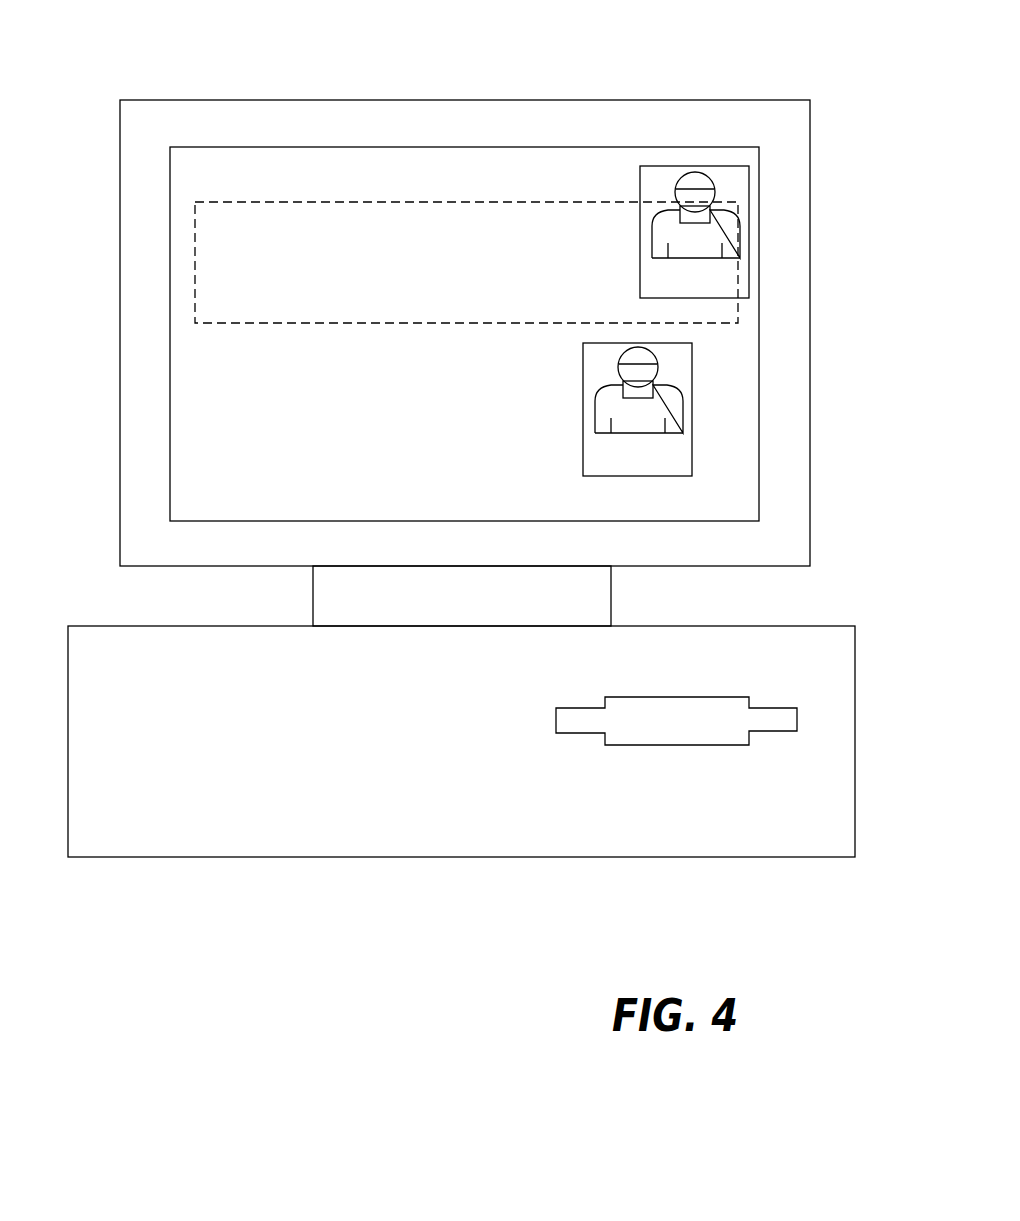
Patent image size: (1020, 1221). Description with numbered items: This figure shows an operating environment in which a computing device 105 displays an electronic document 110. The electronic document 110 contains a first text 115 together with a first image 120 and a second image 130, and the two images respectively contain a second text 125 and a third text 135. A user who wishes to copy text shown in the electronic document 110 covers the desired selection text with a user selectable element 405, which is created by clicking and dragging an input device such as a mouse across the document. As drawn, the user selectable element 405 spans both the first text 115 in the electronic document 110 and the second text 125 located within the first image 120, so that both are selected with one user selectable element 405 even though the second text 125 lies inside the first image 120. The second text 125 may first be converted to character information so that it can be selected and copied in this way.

The computing device 105 is at (372, 99).
The electronic document 110 is at (255, 446).
The first text 115 is at (235, 237).
The first image 120 is at (735, 218).
The second text 125 is at (738, 283).
The second image 130 is at (683, 392).
The third text 135 is at (638, 477).
The user selectable element 405 is at (462, 324).